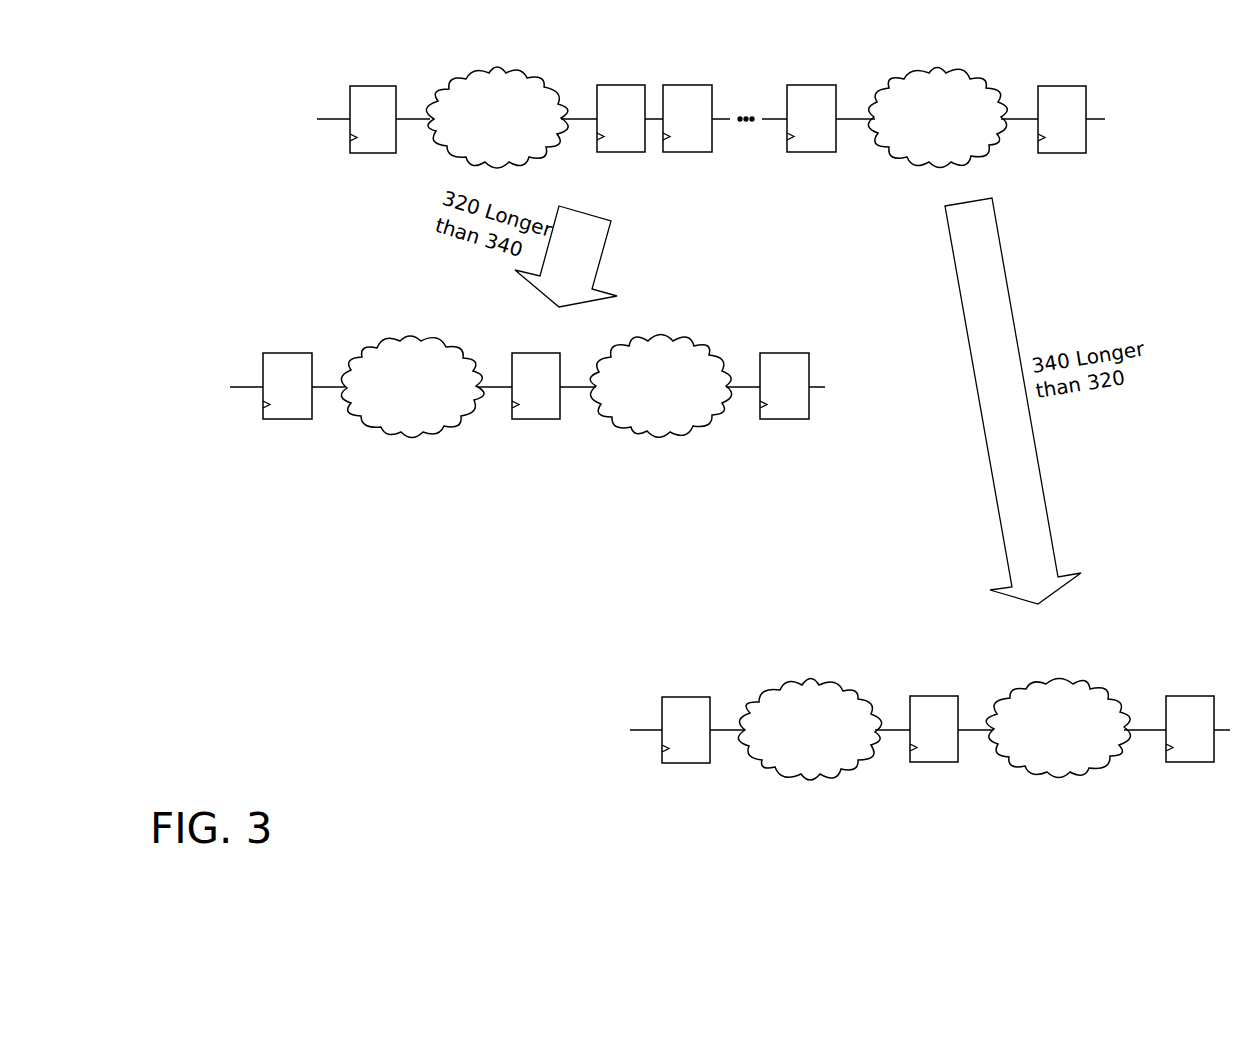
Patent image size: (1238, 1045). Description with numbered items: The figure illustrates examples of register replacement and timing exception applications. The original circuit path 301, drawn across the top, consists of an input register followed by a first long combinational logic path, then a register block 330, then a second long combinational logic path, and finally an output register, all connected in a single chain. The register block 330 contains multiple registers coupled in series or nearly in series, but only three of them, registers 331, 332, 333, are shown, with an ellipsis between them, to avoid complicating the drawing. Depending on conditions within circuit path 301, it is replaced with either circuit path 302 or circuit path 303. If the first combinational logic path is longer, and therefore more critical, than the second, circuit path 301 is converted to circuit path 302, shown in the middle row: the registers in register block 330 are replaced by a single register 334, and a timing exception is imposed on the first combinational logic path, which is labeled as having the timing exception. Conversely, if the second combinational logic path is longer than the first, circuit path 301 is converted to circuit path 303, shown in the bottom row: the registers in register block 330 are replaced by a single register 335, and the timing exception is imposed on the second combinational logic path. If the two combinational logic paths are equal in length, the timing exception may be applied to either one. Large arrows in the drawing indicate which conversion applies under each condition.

The circuit path 301 is at (330, 50).
The circuit path 302 is at (310, 330).
The circuit path 303 is at (707, 670).
The register block 330 is at (838, 75).
The register 331 is at (602, 129).
The register 332 is at (668, 129).
The register 333 is at (792, 129).
The register 334 is at (517, 397).
The register 335 is at (915, 740).